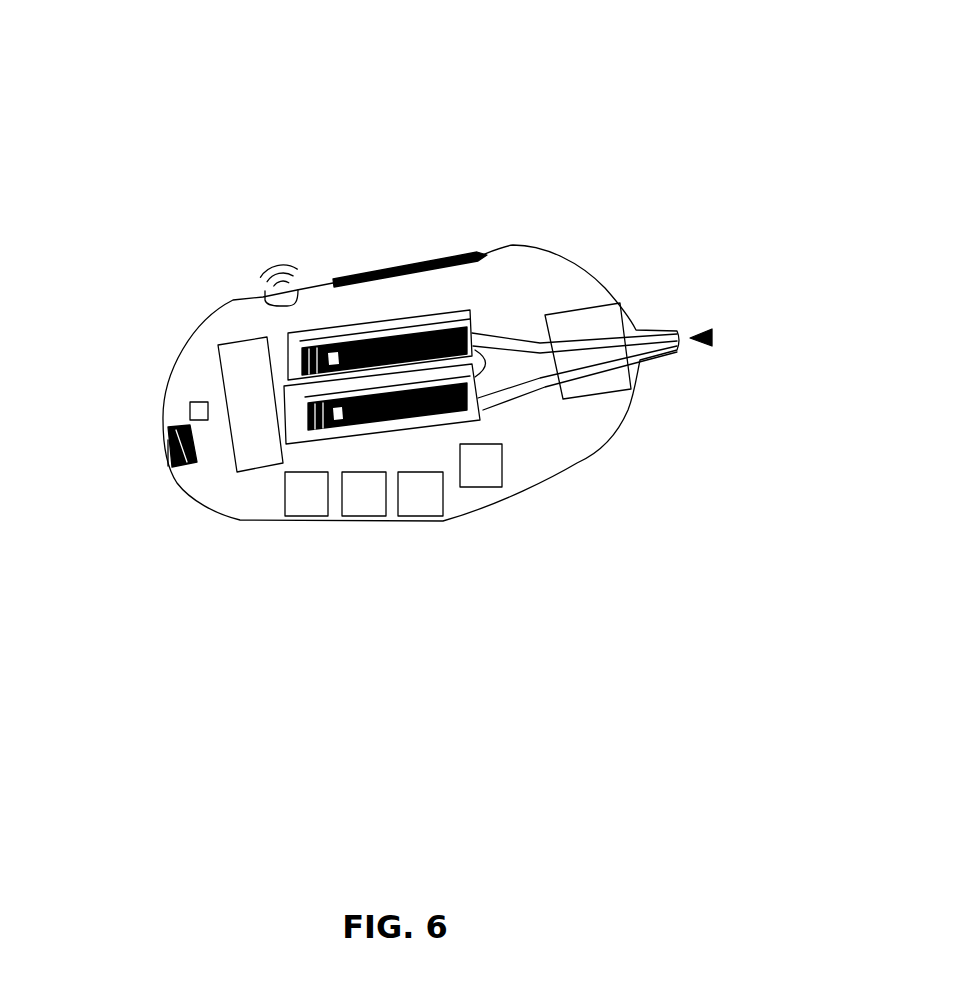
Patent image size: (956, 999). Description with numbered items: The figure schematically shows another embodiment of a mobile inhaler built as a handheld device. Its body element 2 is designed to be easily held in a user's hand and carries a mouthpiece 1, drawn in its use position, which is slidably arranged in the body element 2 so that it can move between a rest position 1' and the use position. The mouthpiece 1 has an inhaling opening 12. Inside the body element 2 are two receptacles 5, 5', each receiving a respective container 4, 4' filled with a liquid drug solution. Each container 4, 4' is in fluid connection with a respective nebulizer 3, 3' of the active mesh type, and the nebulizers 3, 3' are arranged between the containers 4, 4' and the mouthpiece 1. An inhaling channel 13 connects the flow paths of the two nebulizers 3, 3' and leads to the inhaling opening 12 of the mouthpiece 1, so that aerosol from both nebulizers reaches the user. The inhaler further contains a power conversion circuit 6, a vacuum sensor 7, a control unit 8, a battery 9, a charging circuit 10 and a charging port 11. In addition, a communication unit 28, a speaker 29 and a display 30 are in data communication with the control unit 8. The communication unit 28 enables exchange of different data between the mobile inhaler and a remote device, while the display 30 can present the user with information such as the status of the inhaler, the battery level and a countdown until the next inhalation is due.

The mouthpiece 1 is at (649, 464).
The rest position 1' is at (577, 516).
The body element 2 is at (532, 490).
The nebulizer 3 is at (497, 234).
The nebulizer 3' is at (501, 282).
The container 4 is at (438, 221).
The container 4' is at (430, 272).
The receptacle 5 is at (313, 237).
The receptacle 5' is at (284, 315).
The power conversion circuit 6 is at (487, 477).
The vacuum sensor 7 is at (200, 420).
The control unit 8 is at (362, 512).
The battery 9 is at (247, 460).
The charging circuit 10 is at (310, 512).
The charging port 11 is at (180, 466).
The inhaling opening 12 is at (712, 338).
The inhaling channel 13 is at (637, 325).
The communication unit 28 is at (425, 503).
The speaker 29 is at (284, 264).
The display 30 is at (372, 268).